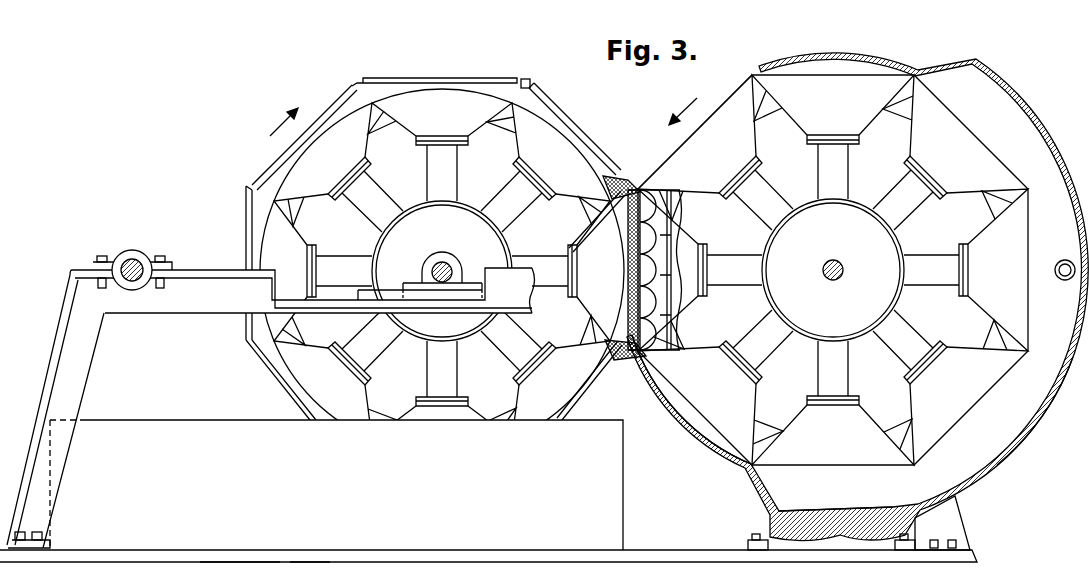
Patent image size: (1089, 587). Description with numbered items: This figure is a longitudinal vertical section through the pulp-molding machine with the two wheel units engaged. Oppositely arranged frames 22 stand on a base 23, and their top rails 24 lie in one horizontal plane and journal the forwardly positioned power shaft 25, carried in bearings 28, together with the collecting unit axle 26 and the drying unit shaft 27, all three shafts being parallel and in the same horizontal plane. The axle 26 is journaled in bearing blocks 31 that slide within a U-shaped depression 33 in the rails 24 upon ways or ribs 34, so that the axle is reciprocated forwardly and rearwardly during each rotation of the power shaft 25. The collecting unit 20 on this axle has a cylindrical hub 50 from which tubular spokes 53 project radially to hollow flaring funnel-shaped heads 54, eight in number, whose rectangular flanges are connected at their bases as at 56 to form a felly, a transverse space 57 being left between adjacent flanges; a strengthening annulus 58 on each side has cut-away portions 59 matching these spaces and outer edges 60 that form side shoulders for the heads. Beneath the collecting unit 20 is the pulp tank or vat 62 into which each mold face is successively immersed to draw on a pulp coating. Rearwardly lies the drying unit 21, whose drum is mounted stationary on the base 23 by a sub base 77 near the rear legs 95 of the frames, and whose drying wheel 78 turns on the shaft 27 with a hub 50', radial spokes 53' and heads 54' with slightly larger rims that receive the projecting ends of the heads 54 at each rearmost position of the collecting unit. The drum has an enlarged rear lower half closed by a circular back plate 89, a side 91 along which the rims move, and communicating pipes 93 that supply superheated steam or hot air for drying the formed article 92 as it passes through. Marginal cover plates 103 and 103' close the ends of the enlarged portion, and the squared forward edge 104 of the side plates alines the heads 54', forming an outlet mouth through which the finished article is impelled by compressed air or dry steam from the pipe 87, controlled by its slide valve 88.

The collecting unit 20 is at (435, 245).
The drying unit 21 is at (857, 304).
The frames 22 is at (55, 409).
The base 23 is at (540, 548).
The top rails 24 is at (303, 281).
The power shaft 25 is at (143, 262).
The collecting unit axle 26 is at (436, 261).
The drying unit shaft 27 is at (845, 270).
The bearings 28 is at (125, 256).
The bearing blocks 31 is at (442, 262).
The U-shaped depression 33 is at (345, 302).
The ways or ribs 34 is at (344, 271).
The cylindrical hub 50 is at (442, 271).
The hub of drying wheel 50' is at (833, 270).
The tubular spokes 53 is at (455, 271).
The radial spokes of drying wheel 53' is at (833, 270).
The funnel-shaped heads 54 is at (442, 271).
The heads of drying wheel 54' is at (833, 270).
The connection of head flanges 56 is at (598, 218).
The transverse space 57 is at (632, 181).
The strengthening annulus 58 is at (585, 134).
The cut-away portions 59 is at (527, 80).
The outer edges of annuli 60 is at (412, 78).
The pulp tank or vat 62 is at (336, 485).
The sub base 77 is at (840, 546).
The drying wheel 78 is at (850, 196).
The compressed air or dry steam pipe 87 is at (240, 574).
The slide valve 88 is at (310, 574).
The circular back plate 89 is at (1010, 452).
The drum side 91 is at (768, 117).
The formed article 92 is at (630, 297).
The communicating pipes 93 is at (1064, 279).
The rear legs 95 is at (859, 523).
The cover plate 103 is at (857, 290).
The cover plate 103' is at (691, 401).
The squared forward edge 104 is at (742, 93).